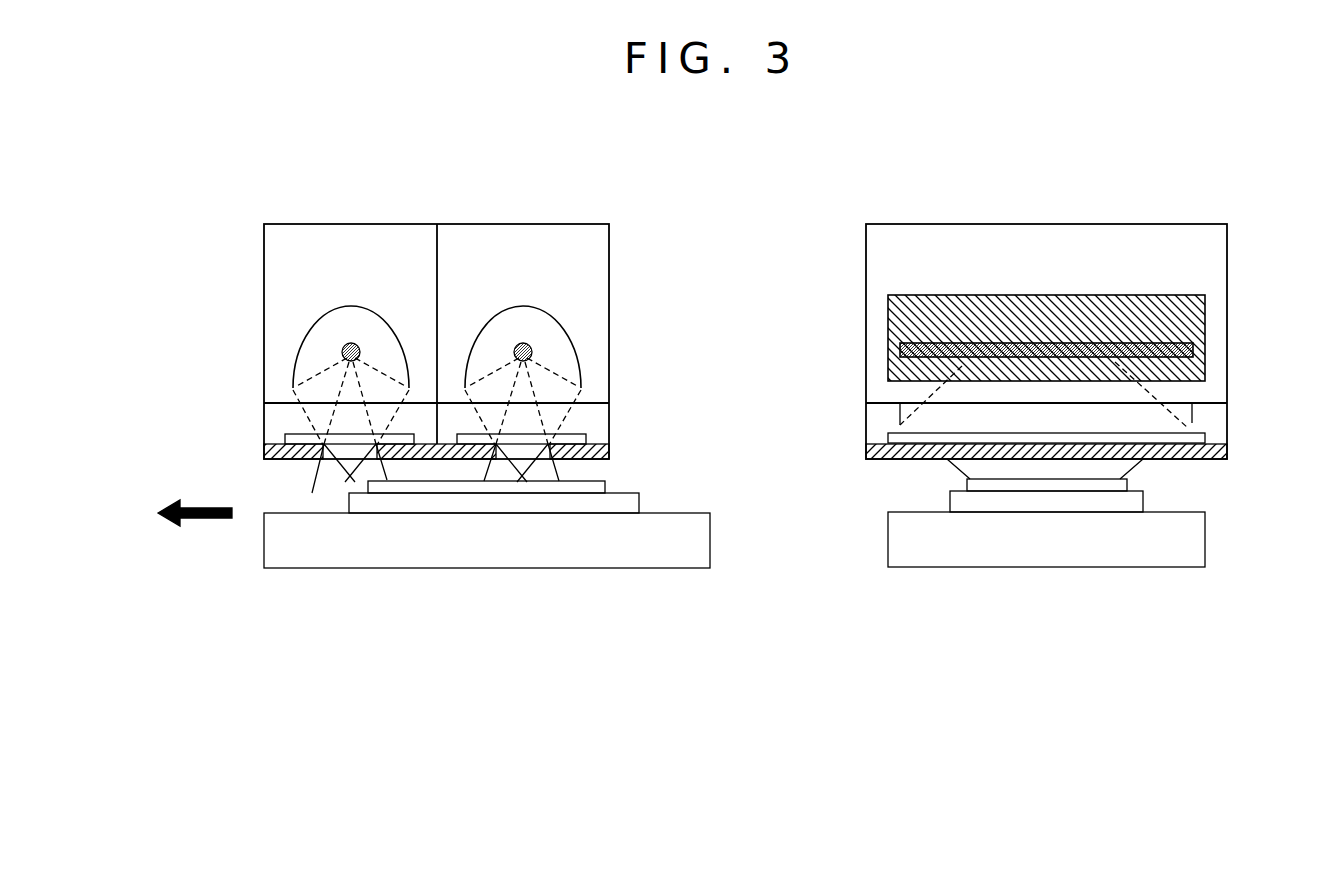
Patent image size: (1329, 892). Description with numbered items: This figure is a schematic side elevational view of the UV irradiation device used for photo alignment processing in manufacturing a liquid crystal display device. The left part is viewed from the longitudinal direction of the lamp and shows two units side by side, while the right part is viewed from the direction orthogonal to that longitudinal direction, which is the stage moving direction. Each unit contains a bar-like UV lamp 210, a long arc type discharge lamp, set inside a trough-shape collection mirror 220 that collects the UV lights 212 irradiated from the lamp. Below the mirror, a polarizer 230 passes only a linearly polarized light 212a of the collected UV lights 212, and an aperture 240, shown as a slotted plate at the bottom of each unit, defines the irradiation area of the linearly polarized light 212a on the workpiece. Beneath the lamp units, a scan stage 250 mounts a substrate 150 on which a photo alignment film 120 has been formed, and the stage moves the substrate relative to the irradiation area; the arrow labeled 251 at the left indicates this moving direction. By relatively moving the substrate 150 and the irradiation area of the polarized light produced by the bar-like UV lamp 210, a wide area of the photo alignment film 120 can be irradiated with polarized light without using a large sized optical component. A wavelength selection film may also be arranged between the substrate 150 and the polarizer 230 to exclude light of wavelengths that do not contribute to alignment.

The bar-like UV lamp 210 is at (533, 346).
The trough-shape collection mirror 220 is at (580, 353).
The polarizer 230 is at (588, 434).
The aperture 240 is at (609, 453).
The UV lights 212 is at (317, 373).
The linearly polarized light 212a is at (313, 472).
The photo alignment film 120 is at (605, 481).
The substrate 150 is at (639, 495).
The scan stage 250 is at (888, 545).
The moving direction 251 is at (199, 518).